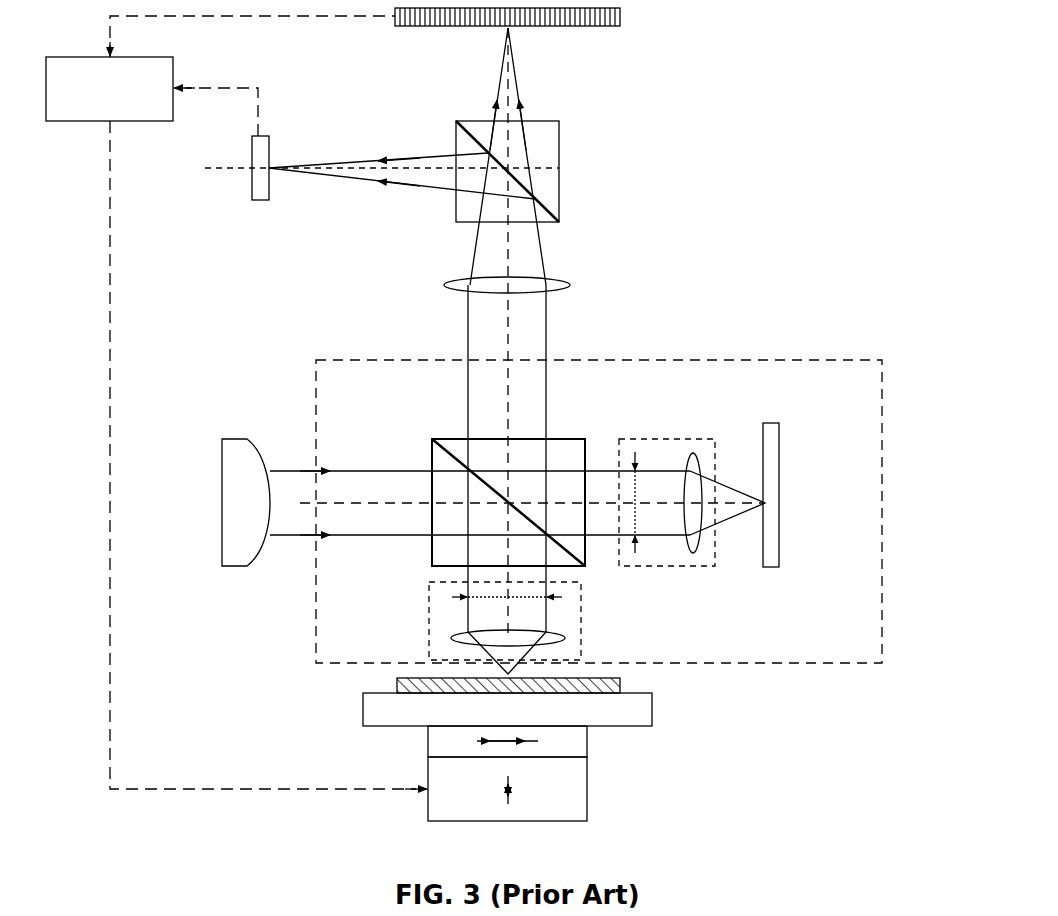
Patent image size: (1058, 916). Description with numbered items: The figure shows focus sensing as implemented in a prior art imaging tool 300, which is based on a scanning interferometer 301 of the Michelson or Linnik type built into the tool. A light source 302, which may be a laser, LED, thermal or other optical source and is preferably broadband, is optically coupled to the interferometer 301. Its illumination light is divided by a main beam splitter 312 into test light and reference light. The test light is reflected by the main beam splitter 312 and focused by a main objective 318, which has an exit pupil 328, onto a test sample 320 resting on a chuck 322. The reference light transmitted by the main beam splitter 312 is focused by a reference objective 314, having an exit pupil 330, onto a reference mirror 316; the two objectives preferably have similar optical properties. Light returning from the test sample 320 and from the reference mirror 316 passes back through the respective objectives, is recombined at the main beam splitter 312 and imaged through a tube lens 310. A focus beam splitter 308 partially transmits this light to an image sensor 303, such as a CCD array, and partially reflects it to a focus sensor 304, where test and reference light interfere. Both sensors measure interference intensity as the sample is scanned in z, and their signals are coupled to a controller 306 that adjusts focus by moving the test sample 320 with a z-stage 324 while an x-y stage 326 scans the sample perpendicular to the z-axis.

The imaging tool 300 is at (758, 143).
The scanning interferometer 301 is at (330, 358).
The light source 302 is at (237, 472).
The image sensor 303 is at (620, 24).
The focus sensor 304 is at (264, 153).
The controller 306 is at (101, 110).
The focus beam splitter 308 is at (545, 188).
The tube lens 310 is at (552, 283).
The main beam splitter 312 is at (552, 455).
The reference objective 314 is at (690, 455).
The reference mirror 316 is at (773, 502).
The main objective 318 is at (560, 632).
The test sample 320 is at (612, 680).
The chuck 322 is at (645, 712).
The z-stage 324 is at (582, 745).
The x-y stage 326 is at (572, 805).
The exit pupil 328 is at (436, 582).
The exit pupil 330 is at (655, 455).